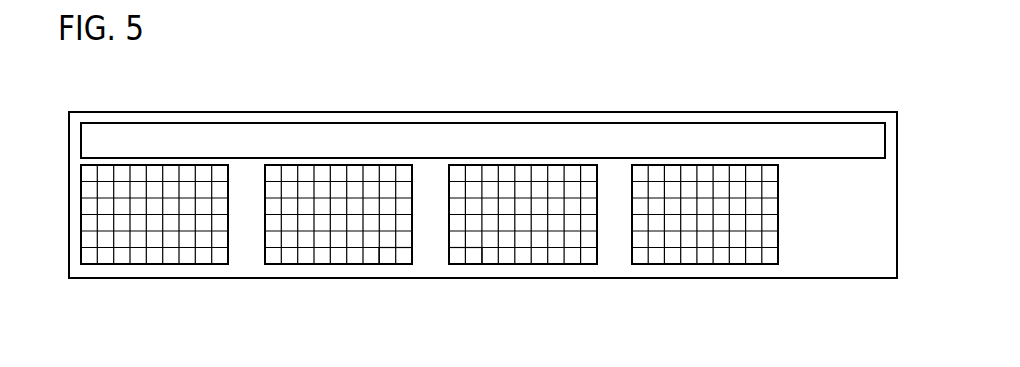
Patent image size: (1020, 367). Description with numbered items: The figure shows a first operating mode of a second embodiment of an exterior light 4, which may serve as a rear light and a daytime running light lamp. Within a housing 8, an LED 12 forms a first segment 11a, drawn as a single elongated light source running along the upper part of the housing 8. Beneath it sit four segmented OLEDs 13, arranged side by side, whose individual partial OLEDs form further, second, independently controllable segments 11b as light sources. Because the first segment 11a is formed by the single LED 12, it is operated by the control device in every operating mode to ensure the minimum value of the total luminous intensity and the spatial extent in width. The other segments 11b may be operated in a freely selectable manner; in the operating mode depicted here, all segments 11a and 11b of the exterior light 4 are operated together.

The exterior light 4 is at (756, 91).
The housing 8 is at (898, 183).
The first segment 11a is at (808, 137).
The second segments 11b is at (474, 256).
The LED 12 is at (258, 123).
The segmented OLEDs 13 is at (203, 265).